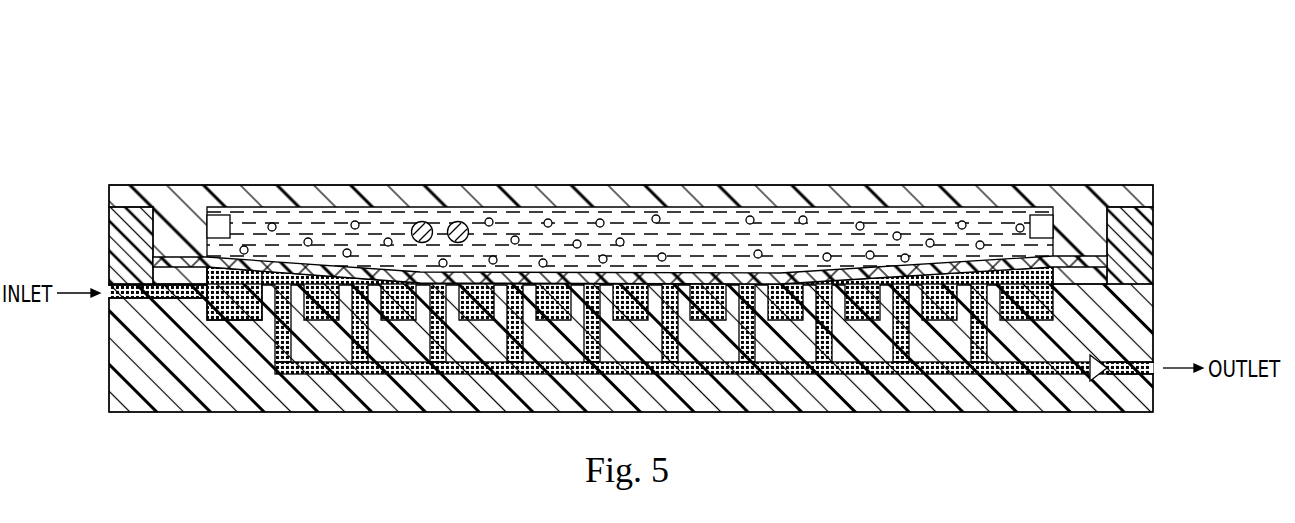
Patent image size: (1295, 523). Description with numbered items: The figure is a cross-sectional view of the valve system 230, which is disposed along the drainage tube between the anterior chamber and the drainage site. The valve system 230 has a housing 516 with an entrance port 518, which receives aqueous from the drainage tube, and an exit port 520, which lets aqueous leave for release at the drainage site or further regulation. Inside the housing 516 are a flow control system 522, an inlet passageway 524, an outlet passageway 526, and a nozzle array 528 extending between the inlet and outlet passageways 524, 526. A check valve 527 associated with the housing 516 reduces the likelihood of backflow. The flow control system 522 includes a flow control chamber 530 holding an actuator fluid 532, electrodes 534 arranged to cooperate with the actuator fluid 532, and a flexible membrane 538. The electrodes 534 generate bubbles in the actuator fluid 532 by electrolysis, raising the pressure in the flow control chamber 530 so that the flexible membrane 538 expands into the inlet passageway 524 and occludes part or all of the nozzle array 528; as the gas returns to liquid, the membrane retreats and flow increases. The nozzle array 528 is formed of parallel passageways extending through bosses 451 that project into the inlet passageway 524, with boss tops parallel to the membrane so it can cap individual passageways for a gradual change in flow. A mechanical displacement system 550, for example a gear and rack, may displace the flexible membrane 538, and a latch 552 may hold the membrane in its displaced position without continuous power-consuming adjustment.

The valve system 230 is at (519, 72).
The boss 451 is at (617, 288).
The housing 516 is at (1153, 302).
The entrance port 518 is at (108, 298).
The exit port 520 is at (1153, 373).
The flow control system 522 is at (344, 149).
The inlet passageway 524 is at (182, 292).
The outlet passageway 526 is at (490, 373).
The check valve 527 is at (1097, 380).
The nozzle array 528 is at (241, 302).
The flow control chamber 530 is at (915, 220).
The actuator fluid 532 is at (722, 250).
The electrodes 534 is at (425, 222).
The flexible membrane 538 is at (958, 263).
The mechanical displacement system 550 is at (219, 214).
The latch 552 is at (1047, 210).